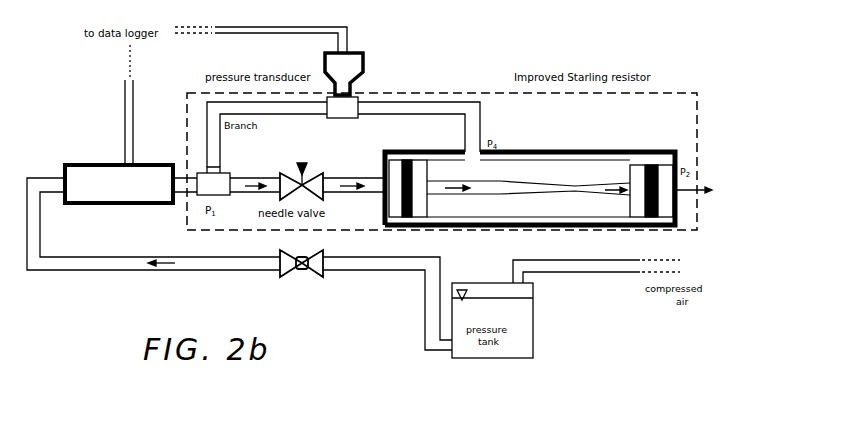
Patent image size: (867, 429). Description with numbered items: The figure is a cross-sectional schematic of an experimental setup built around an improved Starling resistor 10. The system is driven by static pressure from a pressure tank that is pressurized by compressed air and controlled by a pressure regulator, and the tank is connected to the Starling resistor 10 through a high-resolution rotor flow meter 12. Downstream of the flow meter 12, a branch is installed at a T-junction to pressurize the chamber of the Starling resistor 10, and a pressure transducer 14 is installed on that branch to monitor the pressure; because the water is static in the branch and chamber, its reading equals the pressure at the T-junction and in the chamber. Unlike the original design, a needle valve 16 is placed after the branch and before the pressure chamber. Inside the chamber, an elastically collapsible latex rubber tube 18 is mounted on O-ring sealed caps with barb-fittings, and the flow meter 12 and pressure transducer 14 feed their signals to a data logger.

The Starling resistor 10 is at (582, 150).
The rotor flow meter 12 is at (88, 165).
The pressure transducer 14 is at (366, 63).
The needle valve 16 is at (312, 170).
The latex rubber tube 18 is at (503, 196).